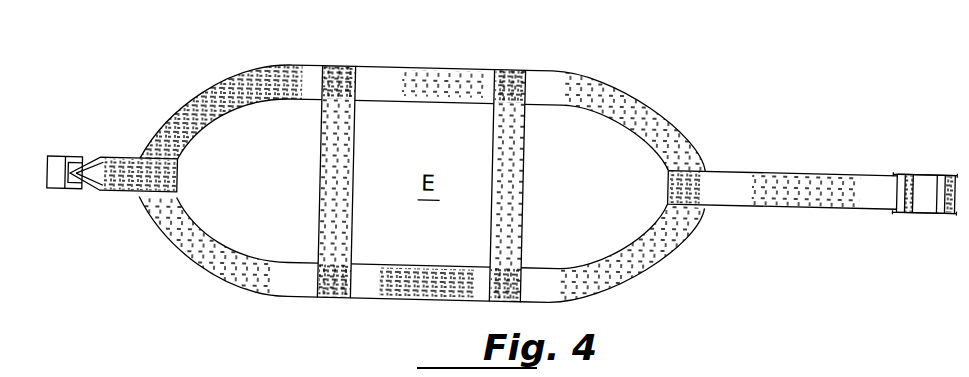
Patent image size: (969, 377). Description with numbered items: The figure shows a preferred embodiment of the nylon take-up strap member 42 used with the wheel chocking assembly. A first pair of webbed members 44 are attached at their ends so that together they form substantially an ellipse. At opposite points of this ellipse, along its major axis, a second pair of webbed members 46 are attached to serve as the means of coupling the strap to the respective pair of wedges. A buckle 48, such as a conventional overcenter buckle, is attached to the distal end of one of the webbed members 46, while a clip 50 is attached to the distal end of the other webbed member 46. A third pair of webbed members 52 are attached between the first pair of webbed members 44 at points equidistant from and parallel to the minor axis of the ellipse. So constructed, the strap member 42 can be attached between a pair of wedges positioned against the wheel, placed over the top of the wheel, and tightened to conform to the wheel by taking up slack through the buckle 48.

The strap member 42 is at (502, 167).
The first pair of webbed members 44 is at (169, 133).
The second pair of webbed members 46 is at (132, 171).
The buckle 48 is at (923, 163).
The clip 50 is at (58, 195).
The third pair of webbed members 52 is at (318, 227).